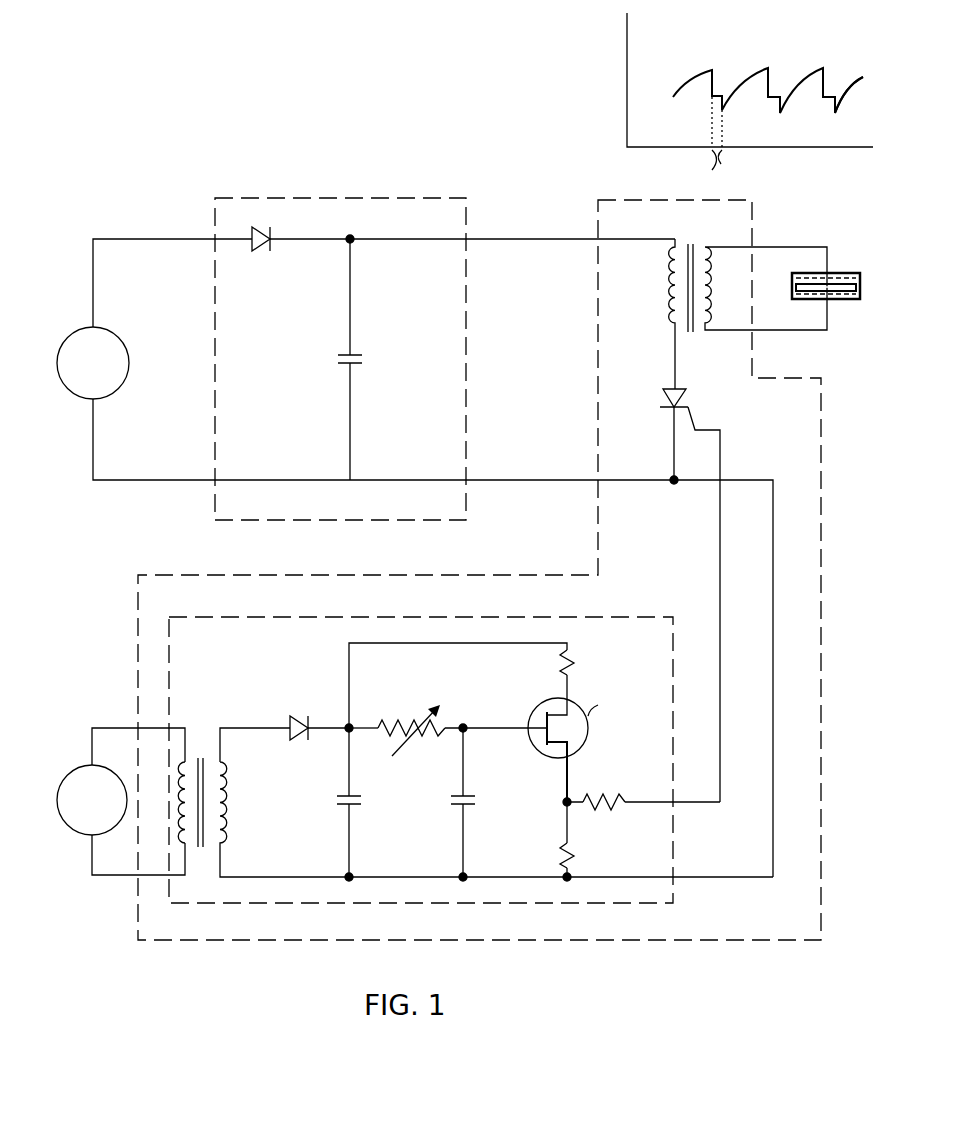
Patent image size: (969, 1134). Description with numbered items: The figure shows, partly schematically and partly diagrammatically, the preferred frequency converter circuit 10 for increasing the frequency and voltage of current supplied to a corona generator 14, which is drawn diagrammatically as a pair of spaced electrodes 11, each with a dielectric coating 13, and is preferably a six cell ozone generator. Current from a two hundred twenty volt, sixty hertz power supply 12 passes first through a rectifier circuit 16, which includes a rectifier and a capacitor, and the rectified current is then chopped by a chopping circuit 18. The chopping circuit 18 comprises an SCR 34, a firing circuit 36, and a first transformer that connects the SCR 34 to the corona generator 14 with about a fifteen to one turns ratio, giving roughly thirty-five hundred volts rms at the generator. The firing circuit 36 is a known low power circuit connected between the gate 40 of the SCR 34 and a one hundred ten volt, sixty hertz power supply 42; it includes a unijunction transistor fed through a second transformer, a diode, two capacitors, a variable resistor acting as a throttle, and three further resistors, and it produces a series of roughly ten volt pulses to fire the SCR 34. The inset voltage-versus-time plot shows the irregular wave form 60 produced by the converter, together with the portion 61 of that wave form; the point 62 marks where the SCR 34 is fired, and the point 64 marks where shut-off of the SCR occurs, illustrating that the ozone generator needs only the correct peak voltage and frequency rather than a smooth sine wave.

The frequency converter circuit 10 is at (482, 166).
The spaced electrodes 11 is at (852, 280).
The 220 volt, 60 Hz power supply 12 is at (117, 338).
The dielectric coating 13 is at (862, 288).
The corona generator 14 is at (840, 272).
The rectifier circuit 16 is at (346, 199).
The chopping circuit 18 is at (622, 199).
The SCR 34 is at (686, 400).
The firing circuit 36 is at (664, 908).
The gate 40 is at (697, 426).
The 110 volt, 60 Hz power supply 42 is at (67, 776).
The irregular wave form 60 is at (684, 90).
The voltage waveform decay portion 61 is at (837, 100).
The point of the wave form 62 is at (712, 68).
The point of the wave form 64 is at (727, 100).